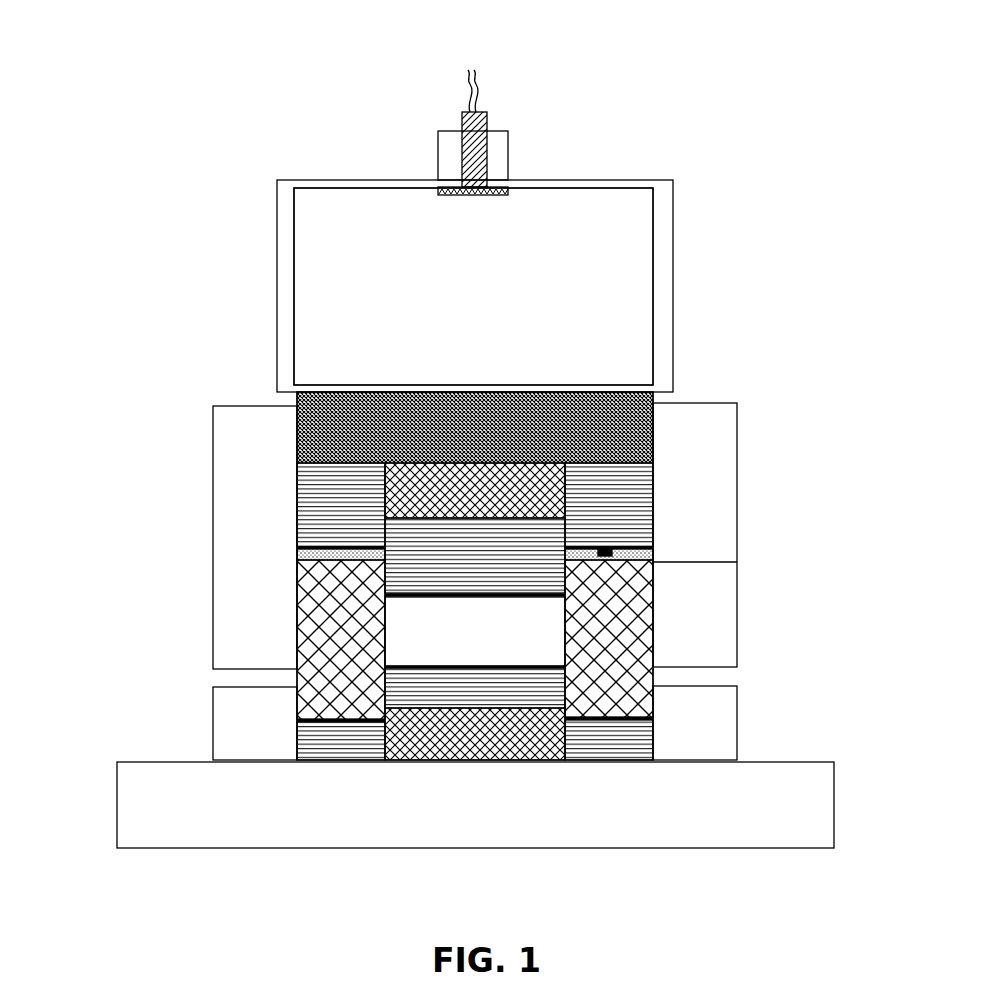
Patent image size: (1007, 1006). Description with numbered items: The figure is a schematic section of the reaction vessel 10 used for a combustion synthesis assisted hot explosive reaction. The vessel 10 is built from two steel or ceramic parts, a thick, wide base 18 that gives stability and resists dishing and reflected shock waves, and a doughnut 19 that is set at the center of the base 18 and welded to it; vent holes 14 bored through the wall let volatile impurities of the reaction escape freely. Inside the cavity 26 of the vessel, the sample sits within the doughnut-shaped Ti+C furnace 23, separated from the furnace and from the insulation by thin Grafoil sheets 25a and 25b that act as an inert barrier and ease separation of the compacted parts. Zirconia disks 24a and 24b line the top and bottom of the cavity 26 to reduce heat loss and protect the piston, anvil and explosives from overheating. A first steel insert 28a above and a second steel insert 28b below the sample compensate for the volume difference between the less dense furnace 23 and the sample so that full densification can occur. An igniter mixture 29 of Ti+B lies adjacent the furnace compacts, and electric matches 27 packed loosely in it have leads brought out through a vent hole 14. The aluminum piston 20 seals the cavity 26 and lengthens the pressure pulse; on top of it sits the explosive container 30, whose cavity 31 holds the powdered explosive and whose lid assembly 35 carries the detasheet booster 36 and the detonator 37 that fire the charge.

The reaction vessel 10 is at (269, 57).
The vent holes 14 is at (710, 676).
The base 18 is at (780, 803).
The doughnut 19 is at (213, 437).
The aluminum piston 20 is at (653, 399).
The Ti+C furnace 23 is at (307, 623).
The upper Zirconia disk 24a is at (297, 501).
The lower Zirconia disk 24b is at (385, 680).
The upper Grafoil sheet 25a is at (297, 547).
The lower Grafoil sheet 25b is at (297, 719).
The cavity 26 is at (513, 628).
The electric matches 27 is at (612, 552).
The first steel insert 28a is at (653, 479).
The second steel insert 28b is at (653, 744).
The igniter mixture 29 is at (472, 560).
The explosive container 30 is at (720, 224).
The cavity of explosive container 31 is at (588, 282).
The lid assembly 35 is at (548, 153).
The detasheet booster 36 is at (508, 188).
The detonator 37 is at (487, 118).